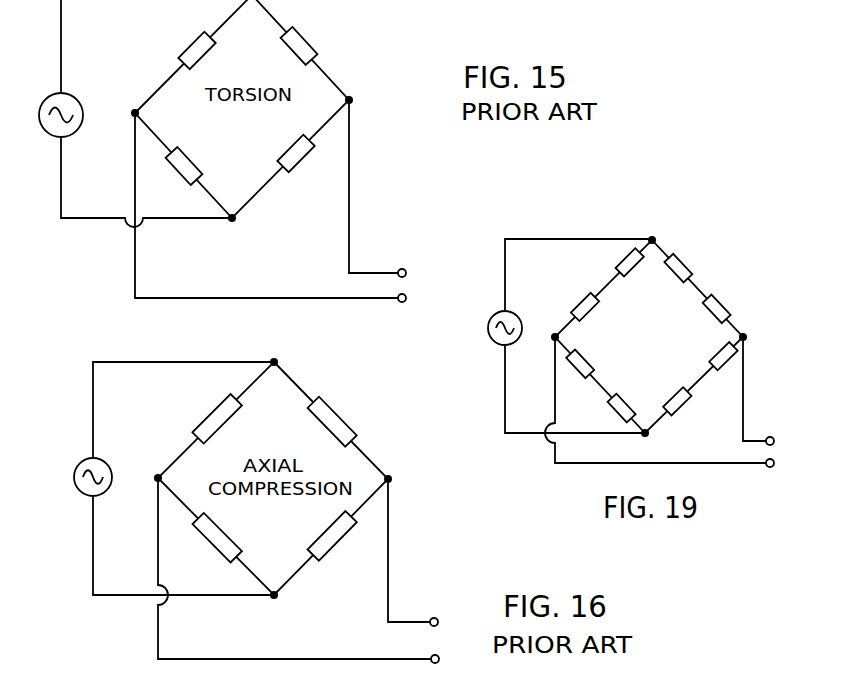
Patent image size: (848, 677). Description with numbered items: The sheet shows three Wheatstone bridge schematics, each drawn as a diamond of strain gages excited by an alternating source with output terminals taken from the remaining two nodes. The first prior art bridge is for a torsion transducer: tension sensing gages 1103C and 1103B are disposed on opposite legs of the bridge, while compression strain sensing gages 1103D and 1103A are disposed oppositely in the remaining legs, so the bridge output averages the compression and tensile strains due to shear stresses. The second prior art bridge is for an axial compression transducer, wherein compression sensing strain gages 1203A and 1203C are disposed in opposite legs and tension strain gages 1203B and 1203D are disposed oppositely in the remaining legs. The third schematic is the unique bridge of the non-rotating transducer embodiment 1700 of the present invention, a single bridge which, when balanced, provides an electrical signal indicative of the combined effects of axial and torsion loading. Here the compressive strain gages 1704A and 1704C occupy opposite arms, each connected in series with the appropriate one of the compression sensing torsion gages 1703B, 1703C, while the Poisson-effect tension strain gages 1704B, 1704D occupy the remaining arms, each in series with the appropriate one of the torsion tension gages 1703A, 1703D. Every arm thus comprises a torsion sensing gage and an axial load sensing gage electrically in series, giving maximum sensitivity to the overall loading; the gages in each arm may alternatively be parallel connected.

In FIG. 15, the compression strain sensing gage 1103A is at (307, 46).
In FIG. 15, the tension sensing gage 1103B is at (291, 170).
In FIG. 15, the tension sensing gage 1103C is at (187, 50).
In FIG. 15, the compression strain sensing gage 1103D is at (212, 148).
In FIG. 16, the compression sensing strain gage 1203A is at (212, 414).
In FIG. 16, the tension strain gage 1203B is at (329, 405).
In FIG. 16, the compression sensing strain gage 1203C is at (333, 552).
In FIG. 16, the tension strain gage 1203D is at (206, 525).
In FIG. 19, the non-rotating transducer embodiment 1700 is at (684, 209).
In FIG. 19, the torsion tension gage 1703A is at (622, 271).
In FIG. 19, the compression sensing gage of the torsion sensing set 1703B is at (596, 362).
In FIG. 19, the compression sensing gage of the torsion sensing set 1703C is at (724, 301).
In FIG. 19, the torsion tension gage 1703D is at (672, 416).
In FIG. 19, the compressive strain gage 1704A is at (676, 255).
In FIG. 19, the Poisson-effect tension strain gage 1704B is at (588, 300).
In FIG. 19, the compressive strain gage 1704C is at (626, 413).
In FIG. 19, the Poisson-effect tension strain gage 1704D is at (718, 371).